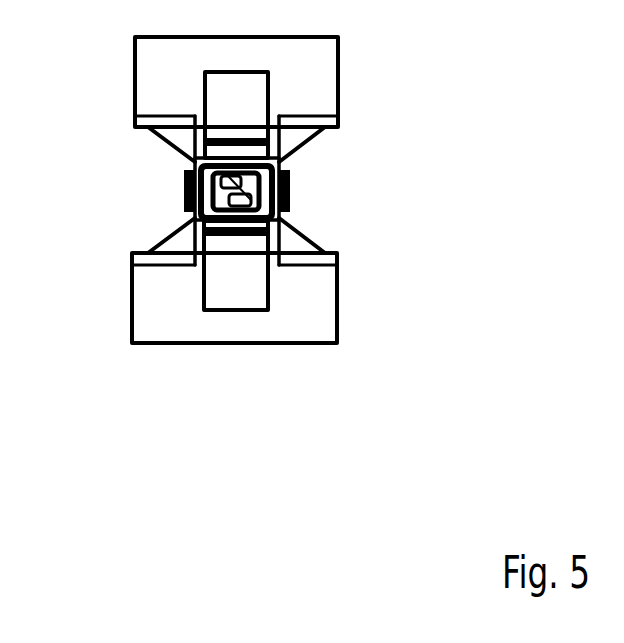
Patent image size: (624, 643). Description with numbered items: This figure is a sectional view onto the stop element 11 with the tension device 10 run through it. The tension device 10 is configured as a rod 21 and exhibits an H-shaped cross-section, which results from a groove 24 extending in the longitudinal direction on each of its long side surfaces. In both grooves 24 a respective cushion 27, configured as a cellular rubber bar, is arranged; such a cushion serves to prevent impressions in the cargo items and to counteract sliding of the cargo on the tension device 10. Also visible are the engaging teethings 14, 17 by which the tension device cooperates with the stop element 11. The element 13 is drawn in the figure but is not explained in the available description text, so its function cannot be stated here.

The mold half / tool block 11 is at (313, 73).
The inclined guide surface 13 is at (290, 153).
The vertical wall 14 is at (192, 208).
The support plate 27 is at (192, 162).
The side bar 17 is at (185, 187).
The component 10 is at (283, 176).
The housing frame 21 is at (343, 188).
The inner element 24 is at (192, 167).